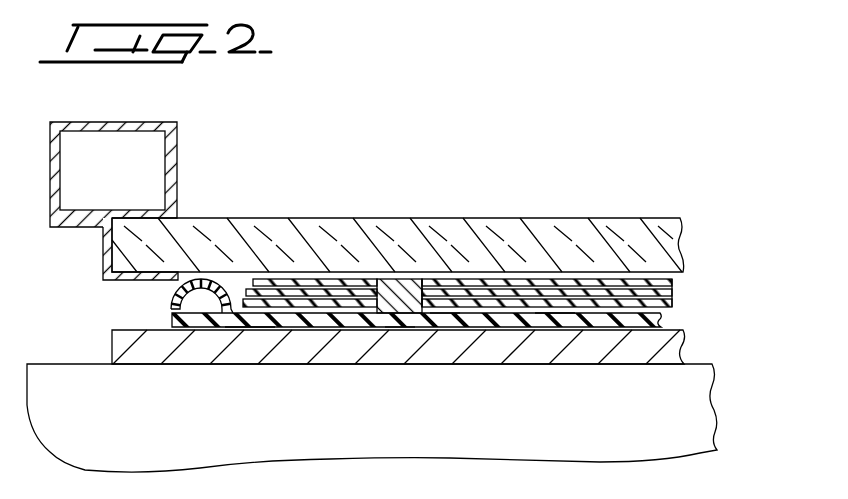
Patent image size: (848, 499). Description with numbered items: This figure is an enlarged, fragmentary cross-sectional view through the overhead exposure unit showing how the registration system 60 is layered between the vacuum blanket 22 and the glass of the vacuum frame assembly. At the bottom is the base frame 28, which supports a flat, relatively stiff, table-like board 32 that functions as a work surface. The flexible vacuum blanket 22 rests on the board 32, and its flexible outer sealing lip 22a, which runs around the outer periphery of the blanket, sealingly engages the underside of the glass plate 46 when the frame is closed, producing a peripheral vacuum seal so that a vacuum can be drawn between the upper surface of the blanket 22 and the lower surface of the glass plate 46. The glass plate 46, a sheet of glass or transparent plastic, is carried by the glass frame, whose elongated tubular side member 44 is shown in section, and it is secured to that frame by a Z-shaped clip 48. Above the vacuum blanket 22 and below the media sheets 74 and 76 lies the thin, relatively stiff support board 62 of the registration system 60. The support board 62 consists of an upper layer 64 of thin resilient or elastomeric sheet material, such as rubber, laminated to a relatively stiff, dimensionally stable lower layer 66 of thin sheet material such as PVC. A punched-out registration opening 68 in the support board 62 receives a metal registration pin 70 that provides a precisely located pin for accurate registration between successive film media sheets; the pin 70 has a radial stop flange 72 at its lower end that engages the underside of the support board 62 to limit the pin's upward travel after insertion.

The vacuum blanket 22 is at (510, 324).
The flexible outer sealing lip 22a is at (232, 307).
The base frame 28 is at (702, 418).
The table-like board 32 is at (677, 346).
The tubular side member 44 is at (178, 137).
The glass plate 46 is at (357, 217).
The Z-shaped clip 48 is at (103, 253).
The registration system 60 is at (690, 297).
The support board 62 is at (247, 328).
The upper layer 64 is at (672, 283).
The lower layer 66 is at (553, 313).
The registration opening 68 is at (402, 313).
The registration pin 70 is at (415, 300).
The radial stop flange 72 is at (443, 318).
The media sheet 74 is at (473, 280).
The media sheet 76 is at (525, 290).